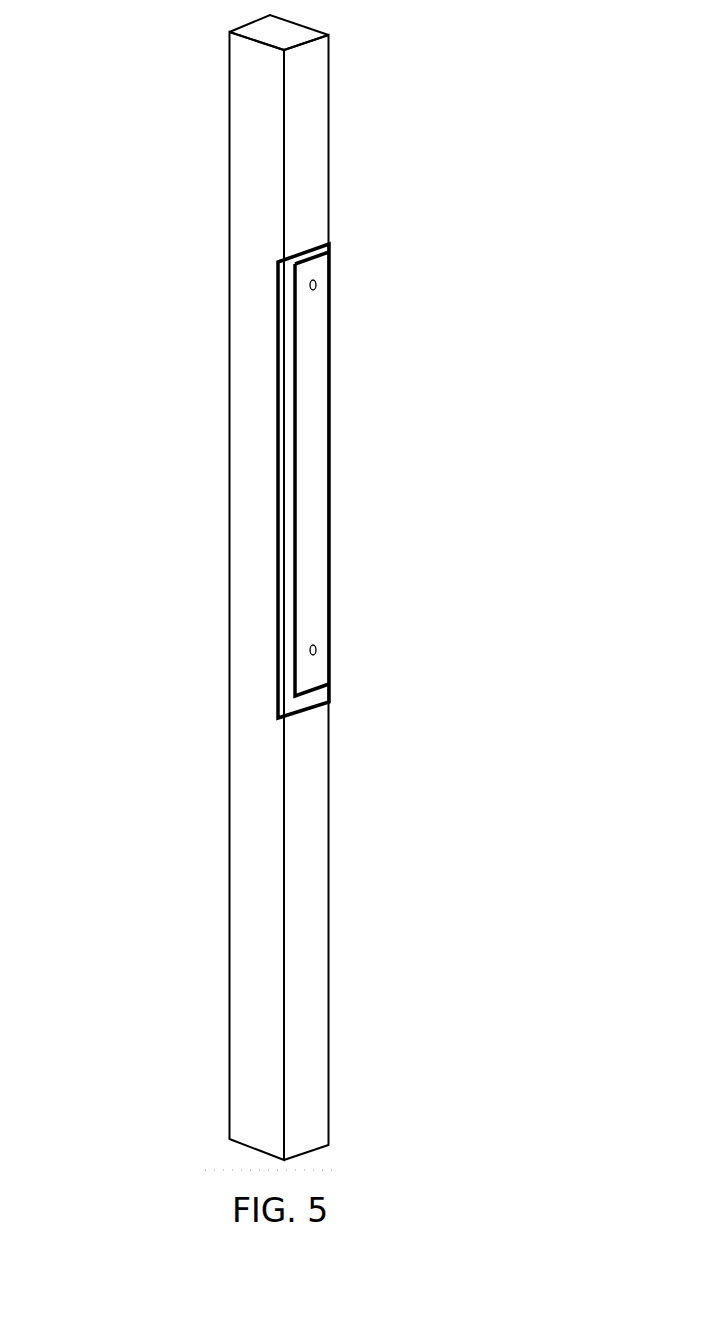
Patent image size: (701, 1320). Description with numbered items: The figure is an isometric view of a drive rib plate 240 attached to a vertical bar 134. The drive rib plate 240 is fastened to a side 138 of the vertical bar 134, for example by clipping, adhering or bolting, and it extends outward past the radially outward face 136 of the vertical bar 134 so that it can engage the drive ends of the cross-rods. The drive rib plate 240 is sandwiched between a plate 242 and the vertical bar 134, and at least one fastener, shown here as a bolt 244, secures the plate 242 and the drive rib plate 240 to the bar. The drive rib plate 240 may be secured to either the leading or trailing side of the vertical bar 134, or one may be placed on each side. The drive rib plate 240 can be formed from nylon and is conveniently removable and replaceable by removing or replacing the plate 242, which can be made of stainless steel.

The vertical bar 134 is at (229, 162).
The radially outward face 136 is at (254, 342).
The side 138 is at (310, 155).
The drive rib plate 240 is at (288, 473).
The plate 242 is at (320, 418).
The bolt 244 is at (318, 283).